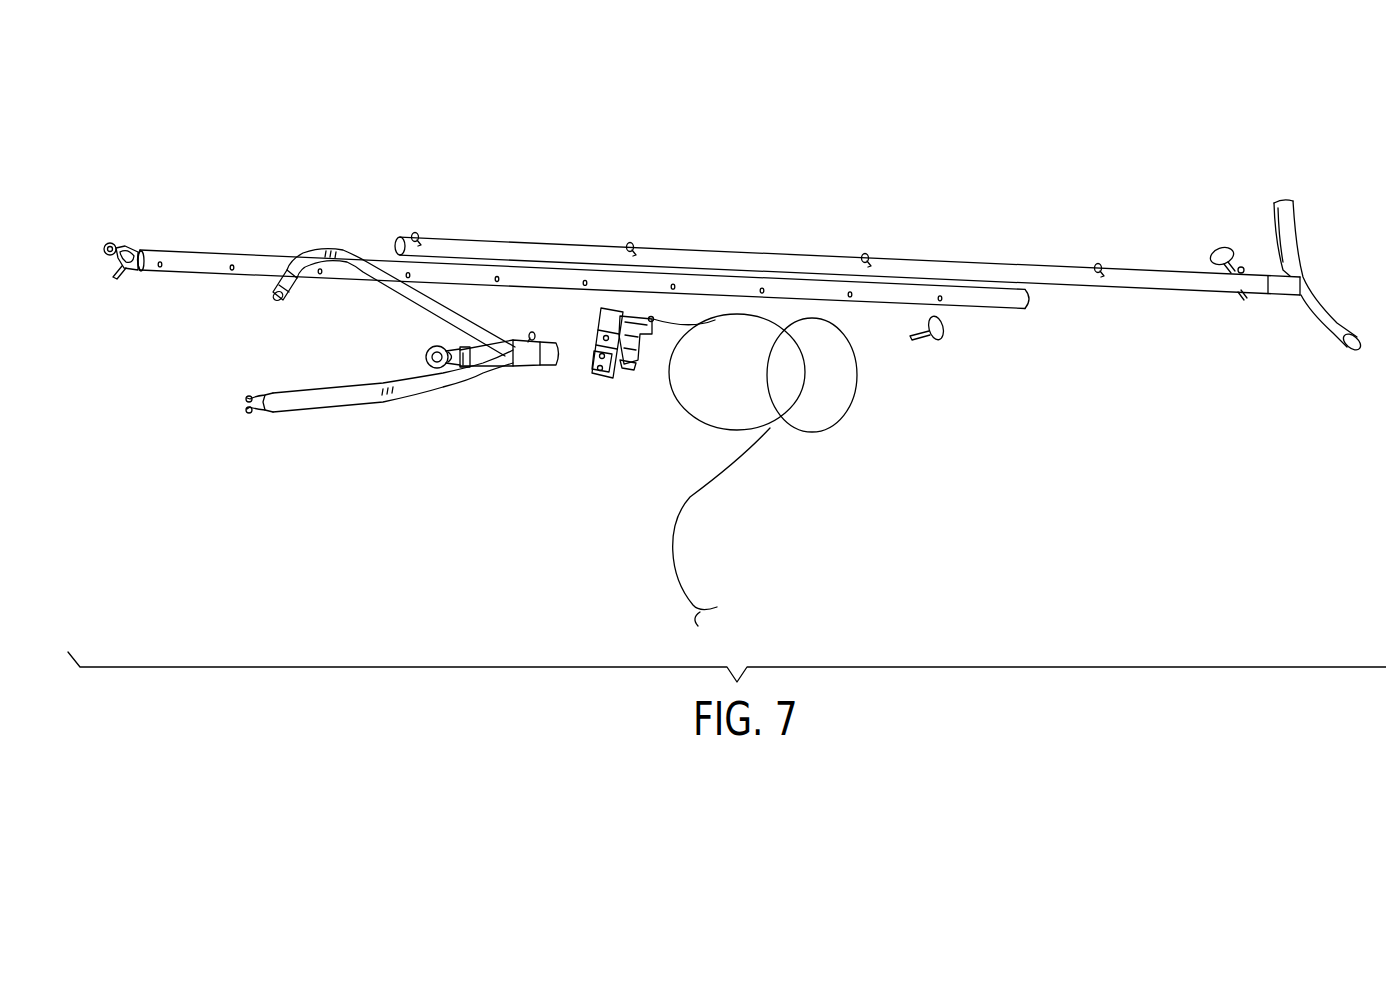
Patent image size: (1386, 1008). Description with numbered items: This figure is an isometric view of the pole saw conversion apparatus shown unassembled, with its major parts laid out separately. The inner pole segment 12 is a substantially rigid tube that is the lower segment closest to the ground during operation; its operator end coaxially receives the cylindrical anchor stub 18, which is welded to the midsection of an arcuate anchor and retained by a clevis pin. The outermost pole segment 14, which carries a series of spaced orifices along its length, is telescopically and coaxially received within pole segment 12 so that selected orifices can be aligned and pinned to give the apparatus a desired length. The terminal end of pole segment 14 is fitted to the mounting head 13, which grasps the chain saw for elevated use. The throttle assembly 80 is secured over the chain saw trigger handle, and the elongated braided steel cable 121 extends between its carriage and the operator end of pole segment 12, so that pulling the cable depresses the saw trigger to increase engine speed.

The inner pole segment 12 is at (1125, 289).
The mounting head 13 is at (444, 388).
The outermost pole segment 14 is at (562, 277).
The anchor stub 18 is at (1298, 313).
The throttle assembly 80 is at (606, 387).
The braided steel cable 121 is at (690, 495).